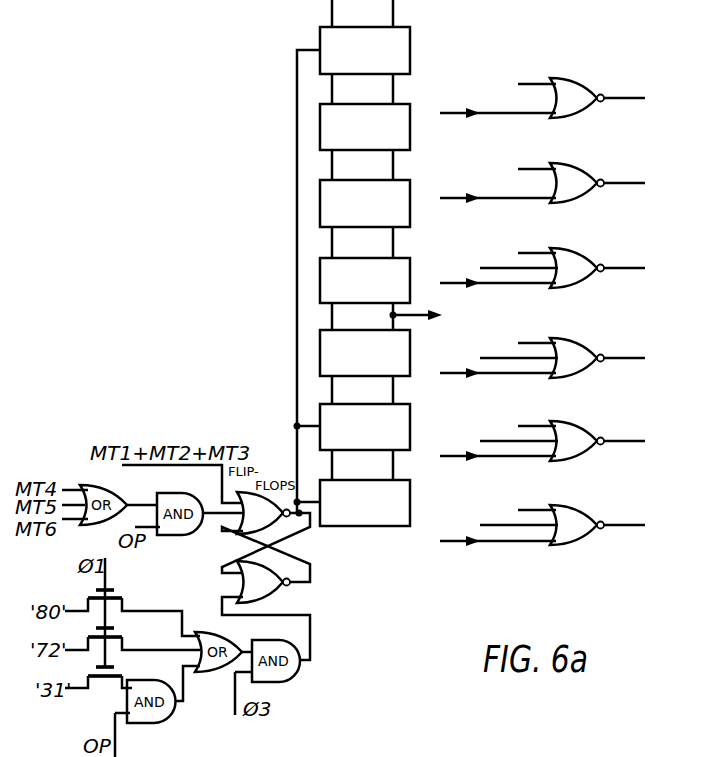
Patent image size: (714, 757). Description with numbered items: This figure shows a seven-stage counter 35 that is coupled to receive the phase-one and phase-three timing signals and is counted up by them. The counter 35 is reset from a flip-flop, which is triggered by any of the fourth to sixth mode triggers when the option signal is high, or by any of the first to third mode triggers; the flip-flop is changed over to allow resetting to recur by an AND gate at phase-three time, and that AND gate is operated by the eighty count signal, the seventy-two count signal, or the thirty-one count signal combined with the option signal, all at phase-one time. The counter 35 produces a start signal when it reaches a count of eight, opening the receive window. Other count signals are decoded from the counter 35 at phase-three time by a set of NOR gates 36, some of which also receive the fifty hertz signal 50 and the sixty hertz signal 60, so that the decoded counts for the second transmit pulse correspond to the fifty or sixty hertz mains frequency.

The seven-stage counter 35 is at (252, 266).
The NOR gates 36 is at (560, 286).
The "50" signal 50 is at (464, 352).
The "60" signal 60 is at (464, 439).